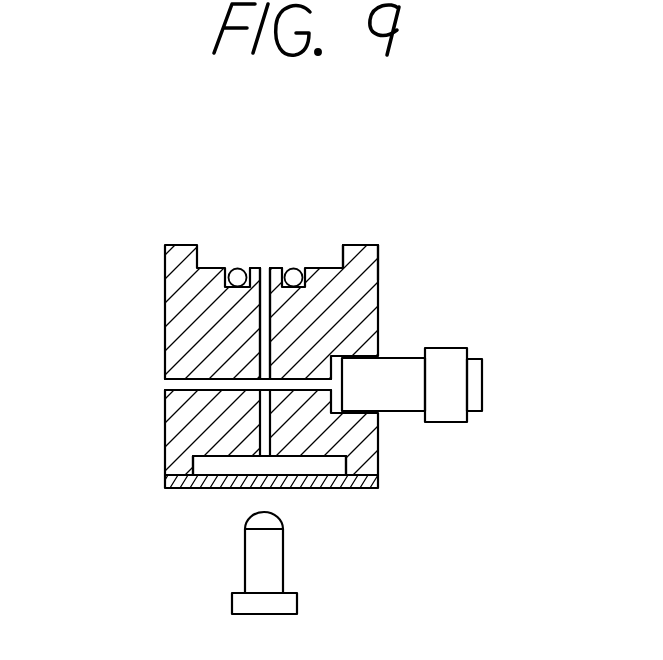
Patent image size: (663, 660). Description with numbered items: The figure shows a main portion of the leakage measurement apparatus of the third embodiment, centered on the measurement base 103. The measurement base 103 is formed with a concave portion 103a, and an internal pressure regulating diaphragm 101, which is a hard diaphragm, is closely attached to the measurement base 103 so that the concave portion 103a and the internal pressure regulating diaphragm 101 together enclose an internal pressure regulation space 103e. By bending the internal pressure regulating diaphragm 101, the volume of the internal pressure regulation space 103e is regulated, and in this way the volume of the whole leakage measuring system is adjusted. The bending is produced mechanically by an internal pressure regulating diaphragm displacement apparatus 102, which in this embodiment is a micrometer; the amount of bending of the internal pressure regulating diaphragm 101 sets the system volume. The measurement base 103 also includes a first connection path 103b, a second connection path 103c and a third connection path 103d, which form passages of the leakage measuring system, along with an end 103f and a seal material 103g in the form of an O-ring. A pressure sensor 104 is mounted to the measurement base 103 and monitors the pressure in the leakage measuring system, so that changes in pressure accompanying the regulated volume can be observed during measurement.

The internal pressure regulating diaphragm 101 is at (378, 480).
The internal pressure regulating diaphragm displacement apparatus 102 is at (287, 568).
The measurement base 103 is at (380, 312).
The concave portion 103a is at (330, 466).
The first connection path 103b is at (265, 270).
The second connection path 103c is at (385, 277).
The third connection path 103d is at (217, 382).
The internal pressure regulation space 103e is at (247, 466).
The end 103f is at (278, 270).
The seal material 103g is at (297, 270).
The pressure sensor 104 is at (462, 348).